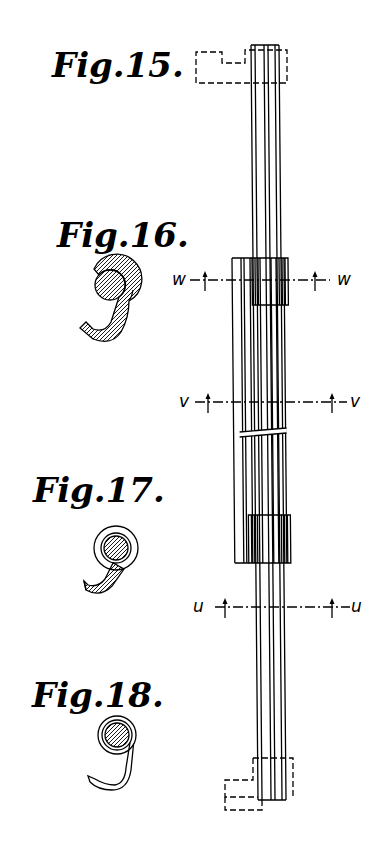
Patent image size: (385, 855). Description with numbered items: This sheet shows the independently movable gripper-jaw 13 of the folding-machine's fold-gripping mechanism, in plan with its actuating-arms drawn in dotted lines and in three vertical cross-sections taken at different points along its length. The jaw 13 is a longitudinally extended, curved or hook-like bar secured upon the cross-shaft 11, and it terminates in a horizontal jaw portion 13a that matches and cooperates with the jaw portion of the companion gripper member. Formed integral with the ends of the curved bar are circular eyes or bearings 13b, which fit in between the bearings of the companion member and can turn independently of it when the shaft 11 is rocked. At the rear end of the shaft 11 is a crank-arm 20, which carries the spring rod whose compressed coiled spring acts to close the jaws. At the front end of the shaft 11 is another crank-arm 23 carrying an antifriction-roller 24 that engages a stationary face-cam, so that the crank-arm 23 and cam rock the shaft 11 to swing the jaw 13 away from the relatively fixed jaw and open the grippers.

In FIG. 15, the cross-shaft 11 is at (282, 177).
In FIG. 16, the cross-shaft 11 is at (95, 283).
In FIG. 17, the cross-shaft 11 is at (116, 548).
In FIG. 18, the cross-shaft 11 is at (136, 732).
In FIG. 15, the gripper-jaw 13 is at (243, 410).
In FIG. 16, the gripper-jaw 13 is at (111, 310).
In FIG. 17, the gripper-jaw 13 is at (122, 590).
In FIG. 18, the gripper-jaw 13 is at (92, 780).
In FIG. 17, the horizontal jaw portion 13a is at (83, 584).
In FIG. 15, the circular eyes or bearings 13b is at (288, 264).
In FIG. 16, the circular eyes or bearings 13b is at (131, 290).
In FIG. 17, the circular eyes or bearings 13b is at (139, 543).
In FIG. 18, the circular eyes or bearings 13b is at (97, 735).
In FIG. 15, the crank-arm 20 is at (229, 83).
In FIG. 15, the crank-arm 23 is at (243, 785).
In FIG. 15, the antifriction-roller 24 is at (218, 815).